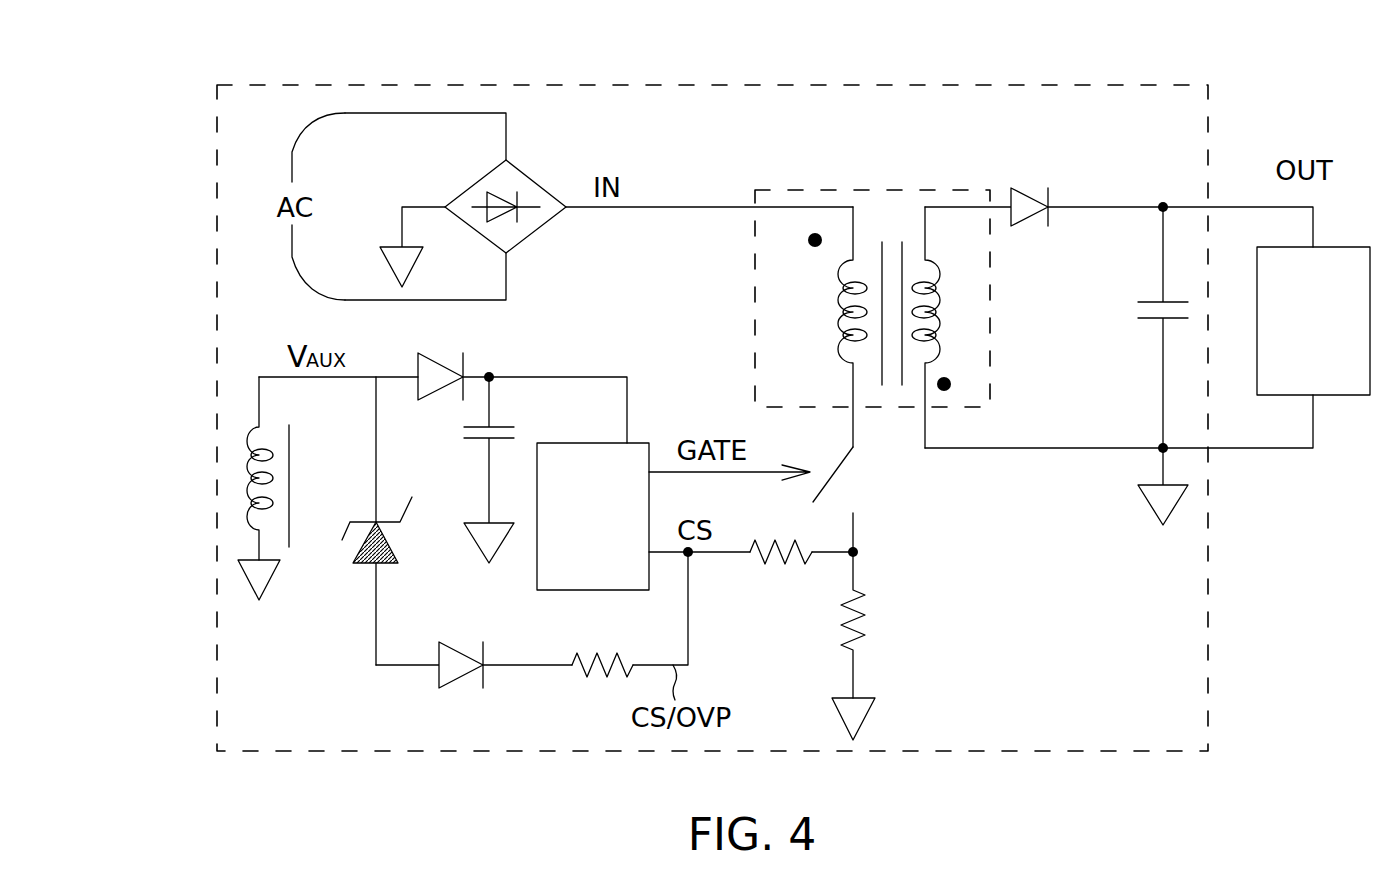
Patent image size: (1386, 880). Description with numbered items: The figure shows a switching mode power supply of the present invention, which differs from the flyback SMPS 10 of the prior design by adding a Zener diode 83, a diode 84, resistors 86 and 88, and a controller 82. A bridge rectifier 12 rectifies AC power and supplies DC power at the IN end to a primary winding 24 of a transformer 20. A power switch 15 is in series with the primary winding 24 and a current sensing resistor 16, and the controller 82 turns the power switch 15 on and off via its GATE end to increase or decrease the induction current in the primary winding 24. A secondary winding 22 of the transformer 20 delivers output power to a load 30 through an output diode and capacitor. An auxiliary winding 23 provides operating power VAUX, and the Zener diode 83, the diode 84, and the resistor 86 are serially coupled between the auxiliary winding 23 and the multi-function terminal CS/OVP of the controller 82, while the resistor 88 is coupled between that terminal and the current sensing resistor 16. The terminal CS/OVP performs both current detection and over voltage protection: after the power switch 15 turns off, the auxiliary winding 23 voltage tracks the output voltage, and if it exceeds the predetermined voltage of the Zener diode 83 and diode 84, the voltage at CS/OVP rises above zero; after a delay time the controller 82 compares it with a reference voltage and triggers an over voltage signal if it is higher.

The SMPS 10 is at (853, 83).
The bridge rectifier 12 is at (477, 184).
The transformer 20 is at (853, 187).
The secondary winding 22 is at (940, 302).
The primary winding 24 is at (840, 323).
The auxiliary winding 23 is at (247, 493).
The load 30 is at (1298, 337).
The power switch 15 is at (855, 495).
The current sensing resistor 16 is at (868, 637).
The controller 82 is at (577, 533).
The Zener diode 83 is at (393, 550).
The diode 84 is at (452, 683).
The resistor 86 is at (590, 665).
The resistor 88 is at (767, 563).